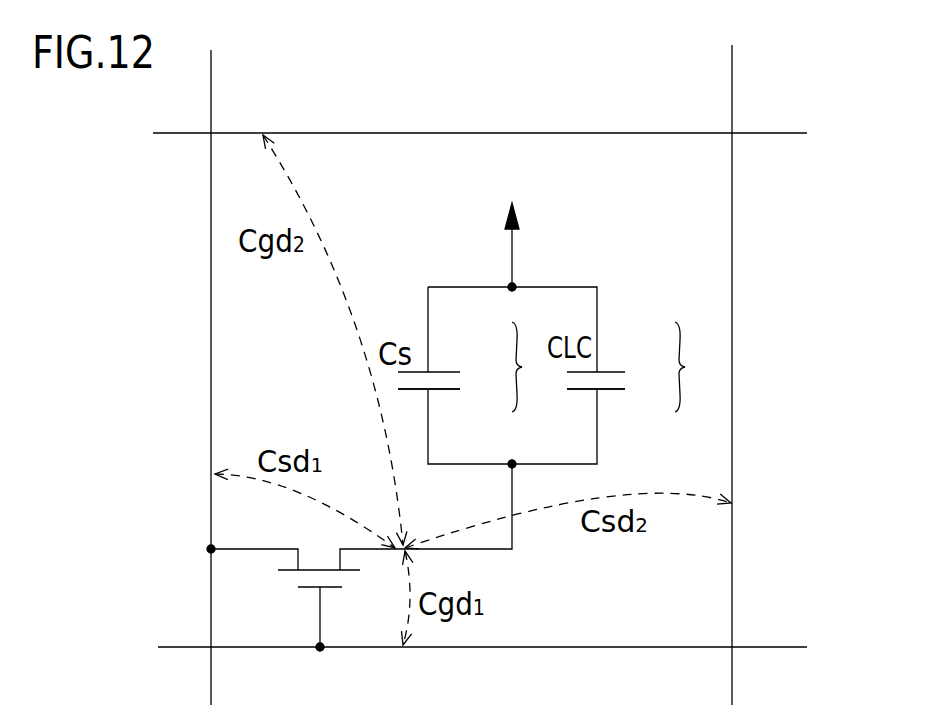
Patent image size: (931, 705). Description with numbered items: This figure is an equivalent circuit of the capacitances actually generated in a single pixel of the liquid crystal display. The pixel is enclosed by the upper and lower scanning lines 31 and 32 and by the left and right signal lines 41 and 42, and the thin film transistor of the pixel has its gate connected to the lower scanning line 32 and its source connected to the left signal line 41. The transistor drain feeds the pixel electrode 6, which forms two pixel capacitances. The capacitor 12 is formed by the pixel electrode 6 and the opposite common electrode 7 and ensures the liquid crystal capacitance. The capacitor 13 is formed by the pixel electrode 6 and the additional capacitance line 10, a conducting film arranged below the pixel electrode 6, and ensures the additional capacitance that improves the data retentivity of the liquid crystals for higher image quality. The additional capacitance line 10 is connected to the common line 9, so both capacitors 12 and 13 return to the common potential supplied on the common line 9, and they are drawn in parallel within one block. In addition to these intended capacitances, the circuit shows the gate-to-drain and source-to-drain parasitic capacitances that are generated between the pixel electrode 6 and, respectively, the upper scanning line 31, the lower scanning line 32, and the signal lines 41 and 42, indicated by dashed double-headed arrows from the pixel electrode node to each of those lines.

The first signal line 41 is at (212, 78).
The second signal line 42 is at (733, 78).
The first scanning line 31 is at (790, 132).
The second scanning line 32 is at (777, 646).
The common line 9 is at (513, 244).
The additional capacitance line 10 is at (448, 372).
The pixel electrode 6 is at (450, 389).
The capacitor 13 is at (478, 367).
The common electrode 7 is at (617, 372).
The capacitor 12 is at (646, 367).